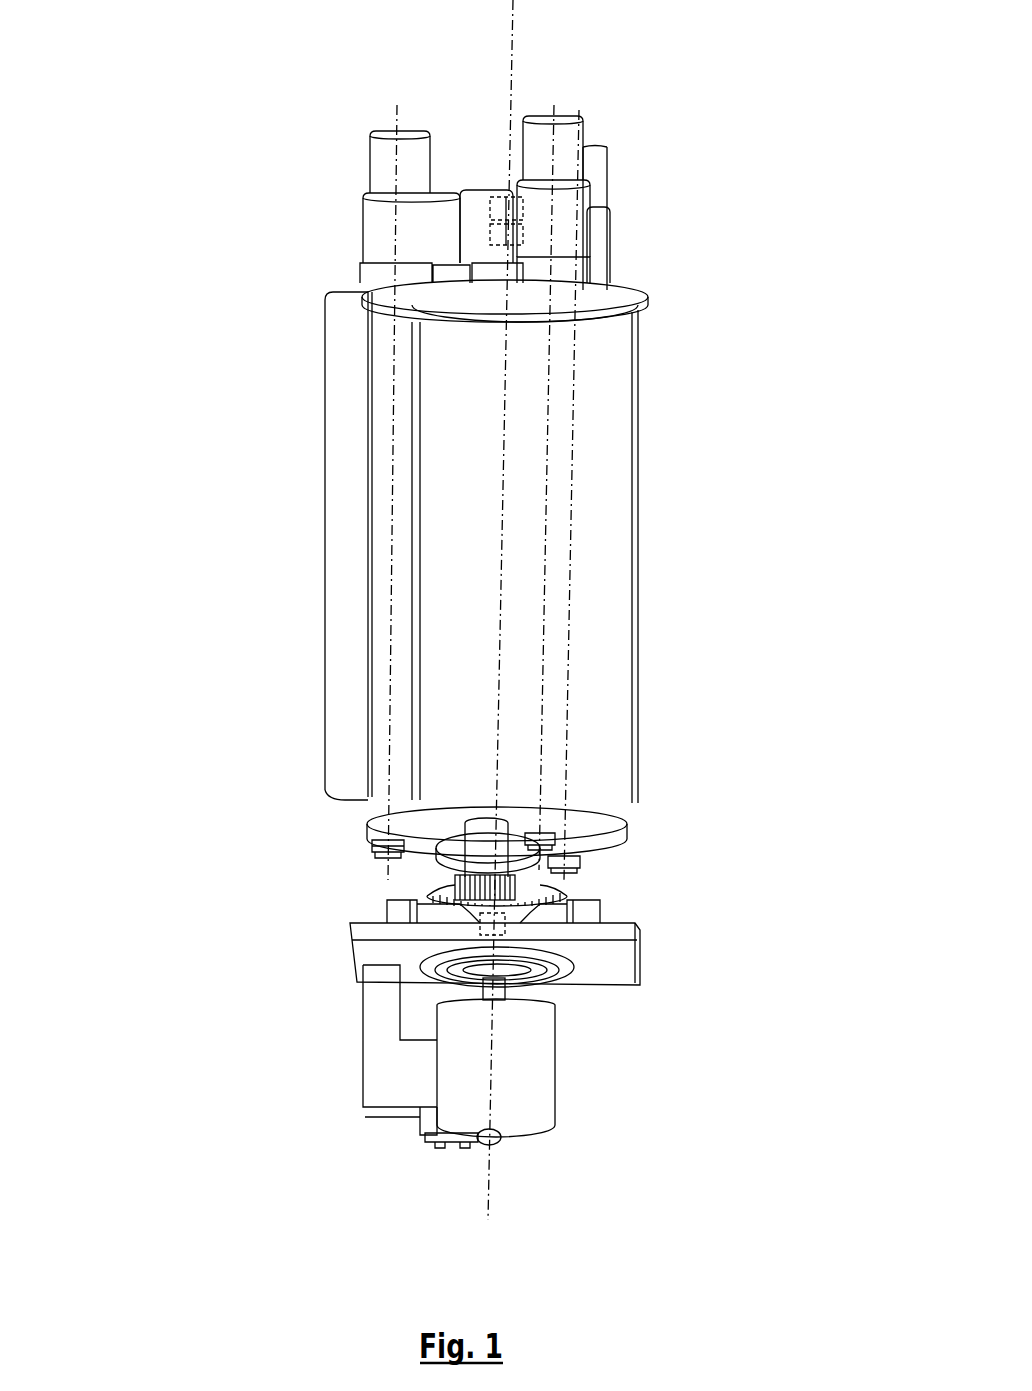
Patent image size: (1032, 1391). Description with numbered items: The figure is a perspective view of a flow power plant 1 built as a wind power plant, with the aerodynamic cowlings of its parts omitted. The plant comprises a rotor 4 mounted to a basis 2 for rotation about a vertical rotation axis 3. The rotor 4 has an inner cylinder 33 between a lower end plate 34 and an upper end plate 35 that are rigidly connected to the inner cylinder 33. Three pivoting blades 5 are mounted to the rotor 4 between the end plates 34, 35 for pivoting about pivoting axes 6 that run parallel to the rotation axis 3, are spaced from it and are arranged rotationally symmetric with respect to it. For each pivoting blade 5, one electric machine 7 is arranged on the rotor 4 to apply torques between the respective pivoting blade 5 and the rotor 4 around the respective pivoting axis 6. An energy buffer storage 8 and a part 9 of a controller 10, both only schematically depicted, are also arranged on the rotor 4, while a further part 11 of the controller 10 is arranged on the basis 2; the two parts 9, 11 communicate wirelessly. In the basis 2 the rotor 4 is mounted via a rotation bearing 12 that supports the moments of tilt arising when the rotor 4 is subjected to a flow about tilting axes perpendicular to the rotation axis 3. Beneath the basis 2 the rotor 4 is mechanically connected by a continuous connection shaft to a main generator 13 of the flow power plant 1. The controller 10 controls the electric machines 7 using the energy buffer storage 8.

The flow power plant 1 is at (242, 57).
The basis 2 is at (360, 930).
The rotation axis 3 is at (511, 47).
The rotor 4 is at (322, 320).
The pivoting blade 5 is at (338, 553).
The pivoting axis 6 is at (397, 120).
The electric machine 7 is at (370, 162).
The energy buffer storage 8 is at (493, 235).
The part of the controller 9 is at (506, 208).
The controller 10 is at (500, 205).
The further part of the controller 11 is at (507, 935).
The rotation bearing 12 is at (432, 970).
The main generator 13 is at (558, 1127).
The inner cylinder 33 is at (512, 575).
The end plate 34 is at (623, 830).
The end plate 35 is at (648, 298).